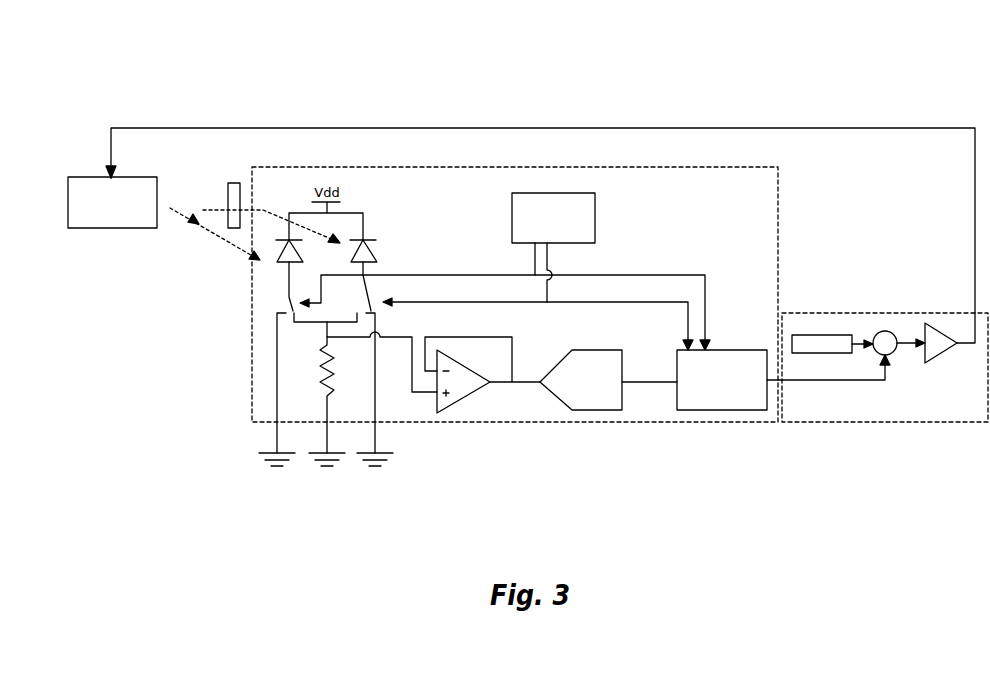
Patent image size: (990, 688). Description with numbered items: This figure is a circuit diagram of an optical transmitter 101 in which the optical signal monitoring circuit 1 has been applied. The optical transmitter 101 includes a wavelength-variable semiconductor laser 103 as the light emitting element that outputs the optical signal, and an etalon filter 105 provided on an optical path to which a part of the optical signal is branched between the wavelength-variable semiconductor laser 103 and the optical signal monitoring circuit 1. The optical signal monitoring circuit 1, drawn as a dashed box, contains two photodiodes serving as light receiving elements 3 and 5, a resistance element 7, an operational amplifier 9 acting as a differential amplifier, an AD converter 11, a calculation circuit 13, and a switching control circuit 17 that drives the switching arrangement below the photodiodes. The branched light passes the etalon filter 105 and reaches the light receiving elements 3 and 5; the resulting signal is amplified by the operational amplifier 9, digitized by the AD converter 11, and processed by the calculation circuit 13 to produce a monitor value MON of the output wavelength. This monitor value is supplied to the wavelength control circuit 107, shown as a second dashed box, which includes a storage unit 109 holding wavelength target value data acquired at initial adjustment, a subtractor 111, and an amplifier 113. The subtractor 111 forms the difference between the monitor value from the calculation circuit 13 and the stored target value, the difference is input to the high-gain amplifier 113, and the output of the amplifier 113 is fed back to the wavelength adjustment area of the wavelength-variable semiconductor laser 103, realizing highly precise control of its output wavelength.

The optical transmitter 101 is at (823, 72).
The wavelength-variable semiconductor laser 103 is at (108, 229).
The etalon filter 105 is at (233, 183).
The optical signal monitoring circuit 1 is at (530, 424).
The light receiving element 3 is at (305, 255).
The light receiving element 5 is at (378, 250).
The resistance element 7 is at (316, 372).
The operational amplifier 9 is at (462, 412).
The AD converter 11 is at (590, 411).
The calculation circuit 13 is at (720, 411).
The switching control circuit 17 is at (597, 217).
The wavelength control circuit 107 is at (885, 424).
The storage unit 109 is at (825, 335).
The subtractor 111 is at (885, 331).
The amplifier 113 is at (942, 329).